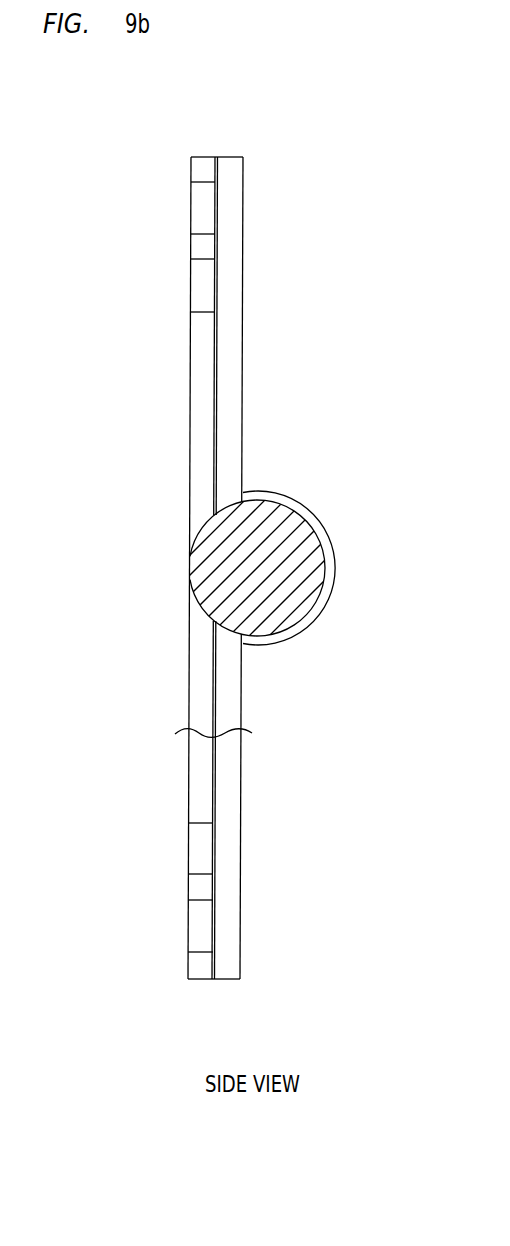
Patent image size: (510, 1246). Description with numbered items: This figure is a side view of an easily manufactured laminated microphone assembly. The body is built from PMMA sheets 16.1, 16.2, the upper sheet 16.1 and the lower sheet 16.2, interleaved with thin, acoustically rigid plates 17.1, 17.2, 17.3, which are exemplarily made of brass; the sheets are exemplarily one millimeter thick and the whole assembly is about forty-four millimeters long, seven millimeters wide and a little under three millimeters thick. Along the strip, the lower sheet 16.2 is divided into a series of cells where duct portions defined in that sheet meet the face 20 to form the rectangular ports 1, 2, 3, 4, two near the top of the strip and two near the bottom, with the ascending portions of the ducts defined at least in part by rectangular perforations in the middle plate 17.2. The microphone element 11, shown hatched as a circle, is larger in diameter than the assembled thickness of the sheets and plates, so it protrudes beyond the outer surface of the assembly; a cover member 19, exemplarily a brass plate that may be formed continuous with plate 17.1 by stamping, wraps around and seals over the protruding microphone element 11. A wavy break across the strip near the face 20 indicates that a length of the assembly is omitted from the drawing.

The port 1 is at (199, 208).
The port 2 is at (199, 292).
The port 3 is at (196, 852).
The port 4 is at (196, 938).
The upper PMMA sheet 16.1 is at (228, 252).
The lower PMMA sheet 16.2 is at (198, 418).
The acoustically rigid plate 17.1 is at (243, 348).
The acoustically rigid plate 17.2 is at (218, 395).
The acoustically rigid plate 17.3 is at (188, 463).
The cover member 19 is at (330, 535).
The microphone element 11 is at (270, 618).
The face 20 is at (215, 732).